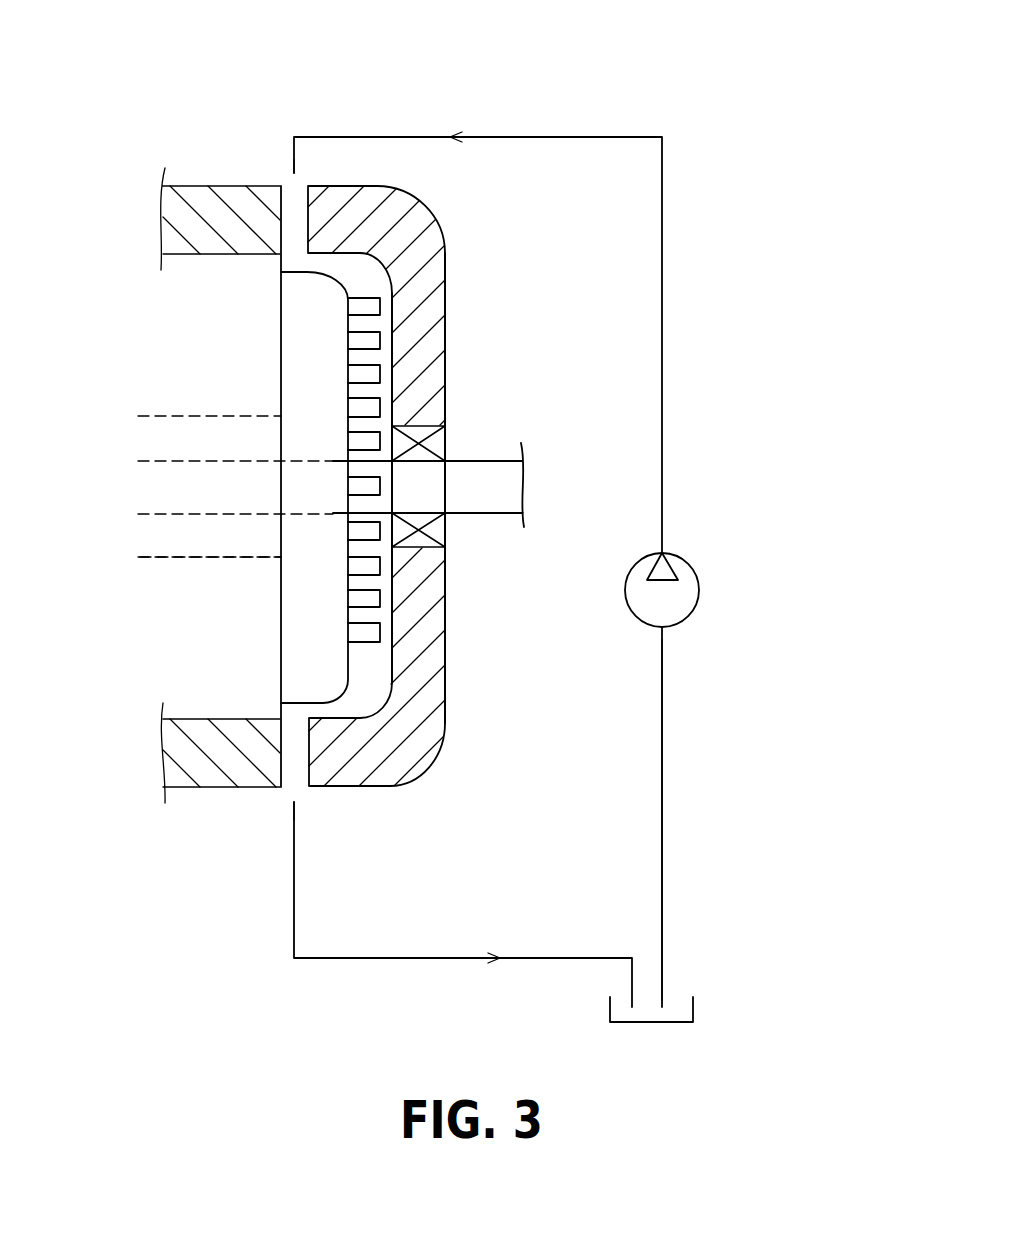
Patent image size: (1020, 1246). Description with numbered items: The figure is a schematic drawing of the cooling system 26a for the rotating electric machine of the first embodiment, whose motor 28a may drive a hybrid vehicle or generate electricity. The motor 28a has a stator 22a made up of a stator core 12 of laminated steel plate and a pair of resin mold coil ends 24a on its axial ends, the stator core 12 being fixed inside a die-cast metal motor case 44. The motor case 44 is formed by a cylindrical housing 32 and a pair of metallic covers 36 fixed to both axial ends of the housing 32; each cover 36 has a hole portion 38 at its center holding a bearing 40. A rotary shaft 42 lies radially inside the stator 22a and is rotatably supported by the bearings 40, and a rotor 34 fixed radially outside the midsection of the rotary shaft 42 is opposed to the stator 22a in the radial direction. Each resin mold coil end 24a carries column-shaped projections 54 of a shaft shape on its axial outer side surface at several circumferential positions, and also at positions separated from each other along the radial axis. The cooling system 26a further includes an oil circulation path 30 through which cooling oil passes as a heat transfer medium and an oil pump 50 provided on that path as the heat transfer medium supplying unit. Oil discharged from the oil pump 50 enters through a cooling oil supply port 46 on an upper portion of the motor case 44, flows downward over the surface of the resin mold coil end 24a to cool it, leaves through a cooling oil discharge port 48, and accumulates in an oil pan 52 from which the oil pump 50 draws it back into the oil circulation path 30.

The stator core 12 is at (245, 688).
The stator 22a is at (217, 358).
The resin mold coil end 24a is at (318, 647).
The cooling system 26a is at (604, 113).
The motor 28a is at (187, 788).
The oil circulation path 30 is at (664, 690).
The housing 32 is at (195, 200).
The rotor 34 is at (180, 559).
The cover 36 is at (418, 288).
The hole portion 38 is at (422, 431).
The bearing 40 is at (433, 527).
The rotary shaft 42 is at (492, 488).
The motor case 44 is at (418, 232).
The cooling oil supply port 46 is at (308, 212).
The cooling oil discharge port 48 is at (307, 742).
The oil pump 50 is at (699, 588).
The oil pan 52 is at (695, 1010).
The column-shaped projection 54 is at (380, 341).